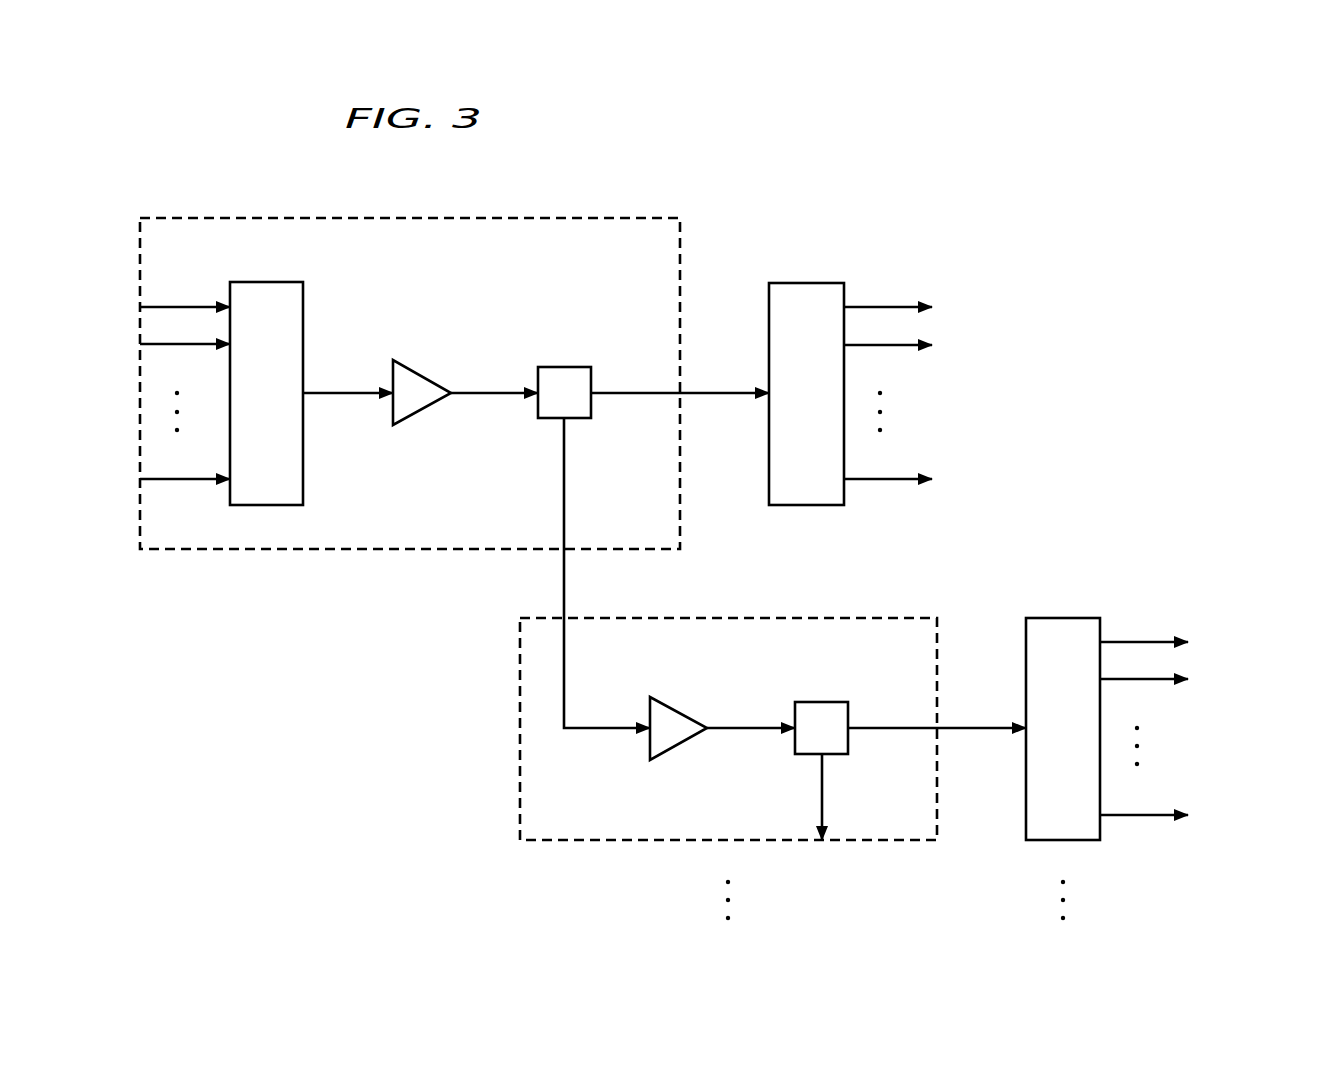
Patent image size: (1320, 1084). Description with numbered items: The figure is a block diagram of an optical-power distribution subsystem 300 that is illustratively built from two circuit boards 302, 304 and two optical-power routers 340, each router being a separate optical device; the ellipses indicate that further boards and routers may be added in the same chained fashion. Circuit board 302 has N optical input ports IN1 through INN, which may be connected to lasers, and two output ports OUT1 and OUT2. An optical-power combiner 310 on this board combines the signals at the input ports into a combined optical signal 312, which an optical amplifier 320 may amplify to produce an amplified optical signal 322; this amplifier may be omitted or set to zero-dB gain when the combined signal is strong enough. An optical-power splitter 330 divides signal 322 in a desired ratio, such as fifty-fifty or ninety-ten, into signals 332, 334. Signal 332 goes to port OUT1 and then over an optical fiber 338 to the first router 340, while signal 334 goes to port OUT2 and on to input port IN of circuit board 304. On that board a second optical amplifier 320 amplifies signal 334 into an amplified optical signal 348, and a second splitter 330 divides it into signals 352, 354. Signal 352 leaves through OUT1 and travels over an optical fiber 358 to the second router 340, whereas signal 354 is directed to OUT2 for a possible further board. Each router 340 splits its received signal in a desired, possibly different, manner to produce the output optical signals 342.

The optical-power distribution subsystem 300 is at (428, 178).
The circuit board 302 is at (583, 218).
The circuit board 304 is at (854, 618).
The OP combiner 310 is at (256, 282).
The combined optical signal 312 is at (346, 388).
The optical amplifier 320 is at (423, 372).
The amplified optical signal 322 is at (486, 388).
The OP splitter 330 is at (565, 367).
The optical signal 332 is at (632, 396).
The optical signal 334 is at (564, 474).
The optical fiber 338 is at (727, 390).
The OP router 340 is at (793, 283).
The optical signals 342 is at (900, 307).
The amplified optical signal 348 is at (742, 726).
The optical signal 352 is at (887, 731).
The optical signal 354 is at (822, 785).
The optical fiber 358 is at (984, 725).